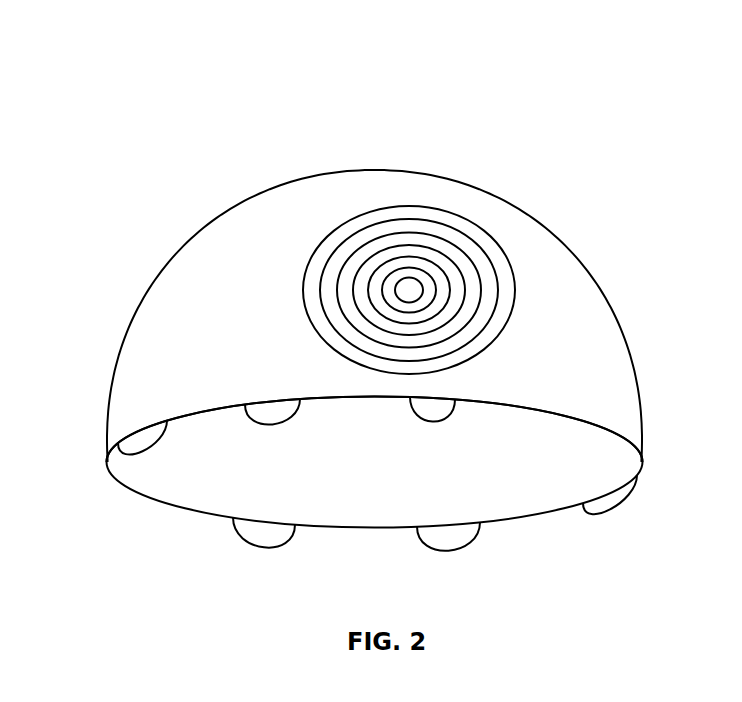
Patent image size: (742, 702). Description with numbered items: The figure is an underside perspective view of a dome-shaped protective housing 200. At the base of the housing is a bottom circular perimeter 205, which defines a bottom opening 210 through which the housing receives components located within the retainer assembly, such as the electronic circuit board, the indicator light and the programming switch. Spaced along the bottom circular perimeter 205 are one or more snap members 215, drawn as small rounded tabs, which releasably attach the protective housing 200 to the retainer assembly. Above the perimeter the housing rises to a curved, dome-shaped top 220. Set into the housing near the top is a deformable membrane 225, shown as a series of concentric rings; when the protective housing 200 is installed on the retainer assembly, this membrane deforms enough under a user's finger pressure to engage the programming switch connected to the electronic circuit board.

The protective housing 200 is at (383, 292).
The bottom circular perimeter 205 is at (558, 511).
The bottom opening 210 is at (192, 465).
The snap members 215 is at (640, 489).
The curved top 220 is at (607, 296).
The deformable membrane 225 is at (509, 264).